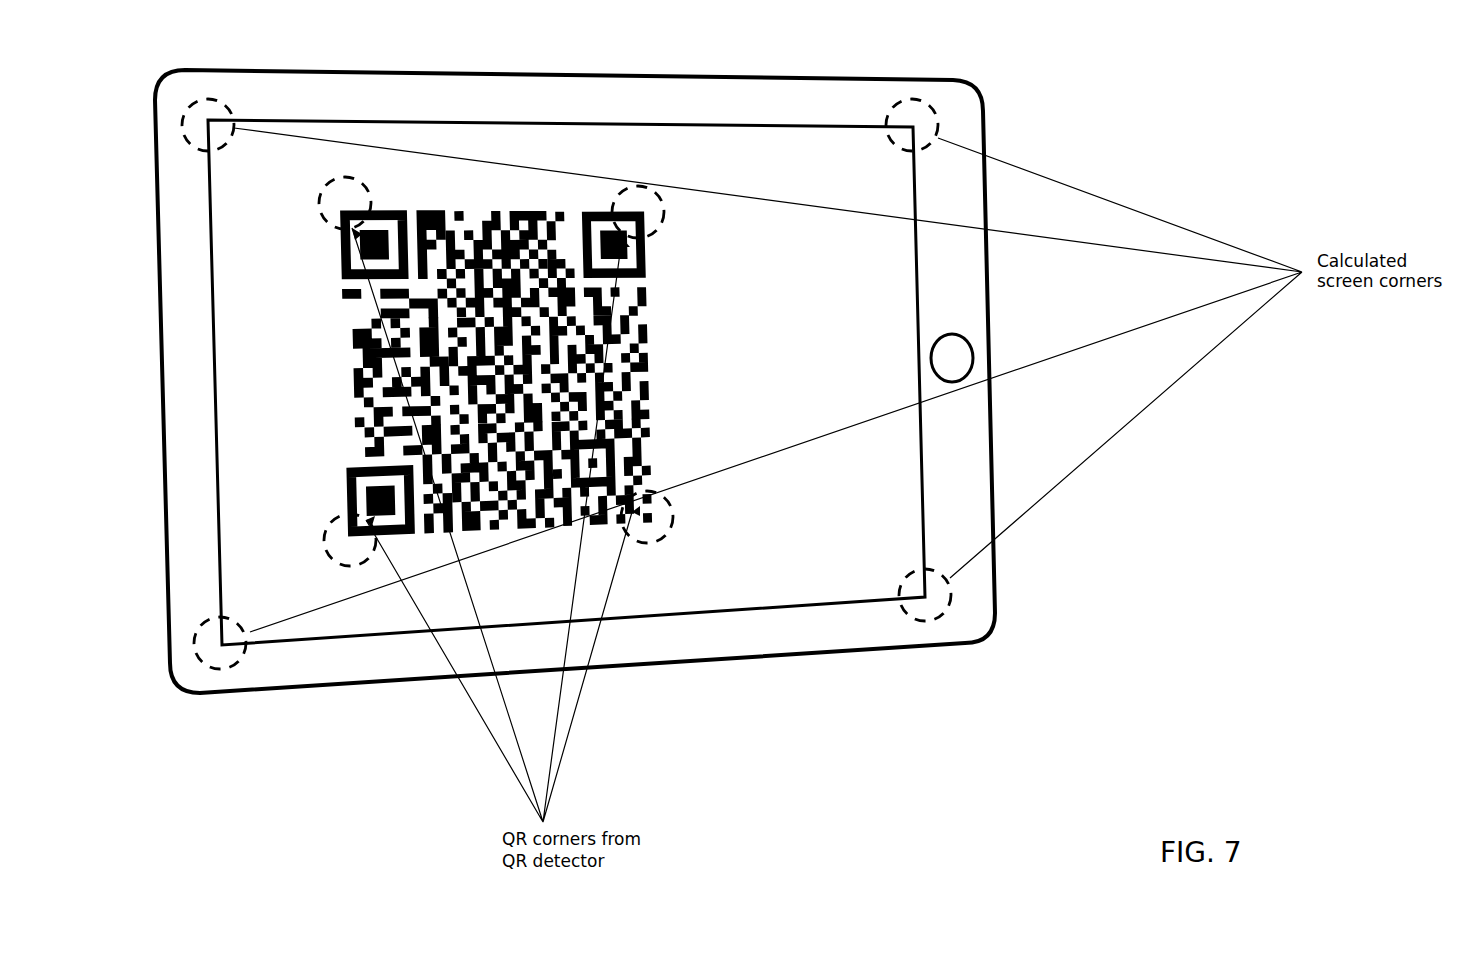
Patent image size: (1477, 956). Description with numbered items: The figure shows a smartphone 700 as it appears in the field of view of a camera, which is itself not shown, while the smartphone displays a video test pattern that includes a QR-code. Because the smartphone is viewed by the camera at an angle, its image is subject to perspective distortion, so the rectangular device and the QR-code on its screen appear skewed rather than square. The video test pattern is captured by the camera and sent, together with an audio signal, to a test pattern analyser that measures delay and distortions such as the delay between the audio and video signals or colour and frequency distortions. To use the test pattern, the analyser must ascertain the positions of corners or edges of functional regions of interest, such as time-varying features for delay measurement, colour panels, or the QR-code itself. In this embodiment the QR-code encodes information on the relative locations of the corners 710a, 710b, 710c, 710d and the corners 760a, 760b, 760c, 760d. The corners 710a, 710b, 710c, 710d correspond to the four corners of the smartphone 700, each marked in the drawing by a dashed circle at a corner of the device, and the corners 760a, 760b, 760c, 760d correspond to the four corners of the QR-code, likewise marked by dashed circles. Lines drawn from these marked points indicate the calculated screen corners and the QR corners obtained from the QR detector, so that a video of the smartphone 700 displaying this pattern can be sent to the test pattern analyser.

The tablet device 700 is at (578, 70).
The smartphone corner 710a is at (195, 103).
The smartphone corner 710b is at (930, 111).
The smartphone corner 710c is at (930, 620).
The smartphone corner 710d is at (220, 672).
The QR-code corner 760a is at (318, 216).
The QR-code corner 760b is at (665, 222).
The QR-code corner 760c is at (675, 530).
The QR-code corner 760d is at (322, 520).